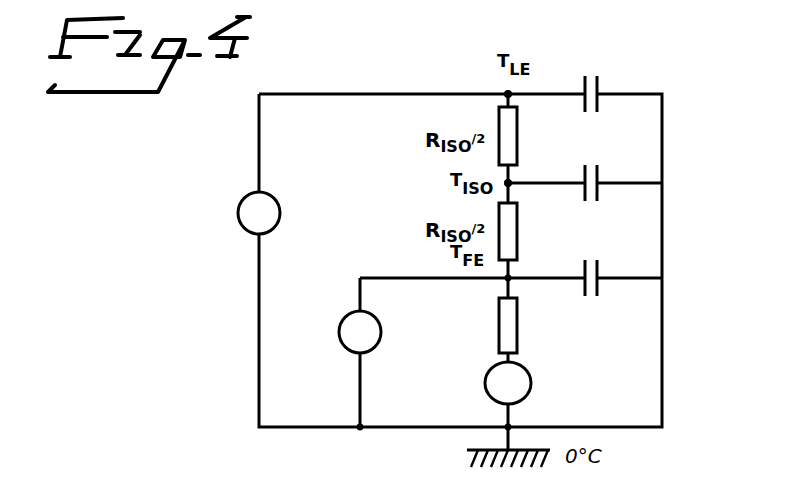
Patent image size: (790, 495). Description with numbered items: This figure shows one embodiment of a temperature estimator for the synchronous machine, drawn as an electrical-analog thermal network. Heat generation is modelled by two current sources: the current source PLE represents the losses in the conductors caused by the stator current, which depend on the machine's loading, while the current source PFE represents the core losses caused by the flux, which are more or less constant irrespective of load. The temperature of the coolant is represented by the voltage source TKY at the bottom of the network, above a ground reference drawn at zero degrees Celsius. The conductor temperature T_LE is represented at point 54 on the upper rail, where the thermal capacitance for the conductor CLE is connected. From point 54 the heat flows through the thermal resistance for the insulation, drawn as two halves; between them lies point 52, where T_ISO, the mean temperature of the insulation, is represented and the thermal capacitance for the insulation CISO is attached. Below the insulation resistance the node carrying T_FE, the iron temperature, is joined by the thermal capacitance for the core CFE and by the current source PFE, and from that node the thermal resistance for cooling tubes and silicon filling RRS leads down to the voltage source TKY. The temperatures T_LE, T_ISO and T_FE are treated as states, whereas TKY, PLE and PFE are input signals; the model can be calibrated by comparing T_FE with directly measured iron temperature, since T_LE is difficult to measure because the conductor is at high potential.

The point 54 is at (508, 94).
The point 52 is at (508, 183).
The current source PLE is at (235, 213).
The current source PFE is at (336, 332).
The thermal capacitance for conductor CLE is at (596, 78).
The thermal capacitance for insulation CISO is at (602, 168).
The thermal capacitance for core CFE is at (597, 264).
The thermal resistance for cooling tubes and silicon filling RRS is at (475, 325).
The voltage source TKY is at (508, 383).